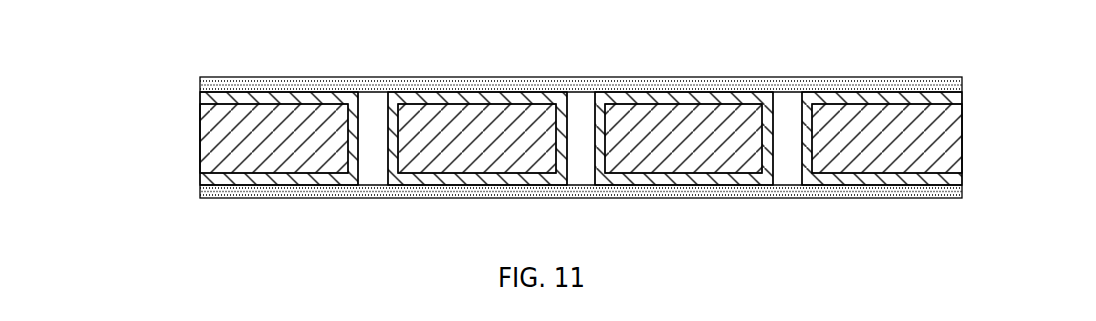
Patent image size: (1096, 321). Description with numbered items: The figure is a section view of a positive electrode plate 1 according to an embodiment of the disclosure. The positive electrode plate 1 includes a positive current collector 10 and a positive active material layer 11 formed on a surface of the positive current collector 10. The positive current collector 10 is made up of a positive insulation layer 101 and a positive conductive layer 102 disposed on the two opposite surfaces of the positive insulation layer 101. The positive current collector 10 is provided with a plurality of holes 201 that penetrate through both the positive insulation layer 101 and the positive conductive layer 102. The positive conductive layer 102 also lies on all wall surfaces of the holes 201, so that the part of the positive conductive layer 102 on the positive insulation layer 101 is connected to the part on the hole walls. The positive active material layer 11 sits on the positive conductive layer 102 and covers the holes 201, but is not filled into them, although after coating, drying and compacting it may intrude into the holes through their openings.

The positive electrode plate 1 is at (632, 41).
The positive current collector 10 is at (654, 91).
The positive active material layer 11 is at (785, 91).
The positive insulation layer 101 is at (200, 137).
The positive conductive layer 102 is at (252, 92).
The holes 201 is at (373, 103).